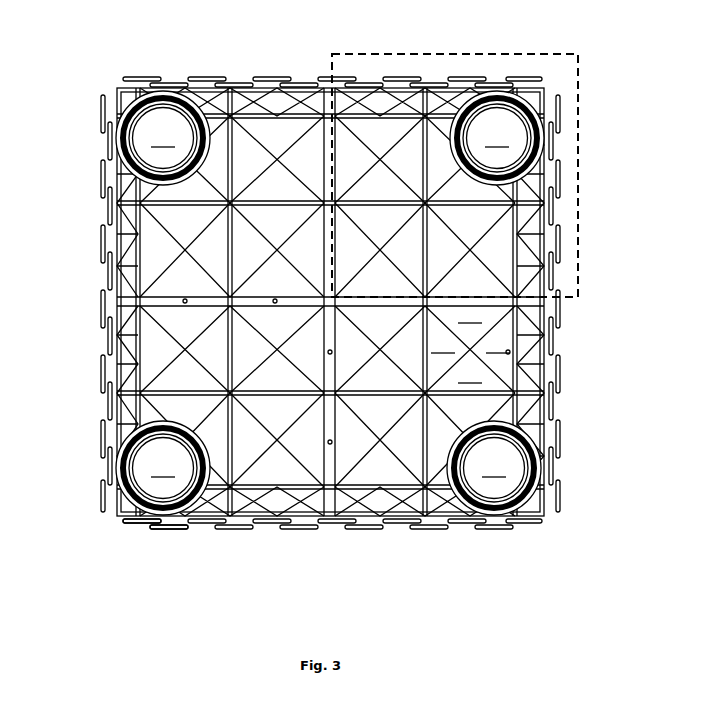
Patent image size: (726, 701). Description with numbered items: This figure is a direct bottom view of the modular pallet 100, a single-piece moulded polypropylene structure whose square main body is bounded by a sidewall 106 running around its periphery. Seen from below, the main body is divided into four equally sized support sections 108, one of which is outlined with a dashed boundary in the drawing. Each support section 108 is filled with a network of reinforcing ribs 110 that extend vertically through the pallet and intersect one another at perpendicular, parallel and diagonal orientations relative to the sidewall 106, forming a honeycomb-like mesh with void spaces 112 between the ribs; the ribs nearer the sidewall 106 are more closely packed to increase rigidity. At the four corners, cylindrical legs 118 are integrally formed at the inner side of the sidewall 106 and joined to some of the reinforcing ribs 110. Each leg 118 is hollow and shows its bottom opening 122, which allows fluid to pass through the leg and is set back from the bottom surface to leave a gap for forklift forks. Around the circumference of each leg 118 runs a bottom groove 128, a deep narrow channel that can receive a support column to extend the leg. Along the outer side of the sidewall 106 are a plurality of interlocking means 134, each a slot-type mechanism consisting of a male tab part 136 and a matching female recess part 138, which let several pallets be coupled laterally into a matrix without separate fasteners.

The modular pallet 100 is at (109, 34).
The sidewall 106 is at (300, 84).
The support section 108 is at (467, 51).
The reinforcing ribs 110 is at (164, 333).
The void spaces 112 is at (533, 418).
The leg 118 is at (152, 125).
The bottom opening 122 is at (330, 303).
The bottom groove 128 is at (121, 153).
The interlocking means 134 is at (133, 580).
The male tab part 136 is at (167, 529).
The female recess part 138 is at (142, 527).